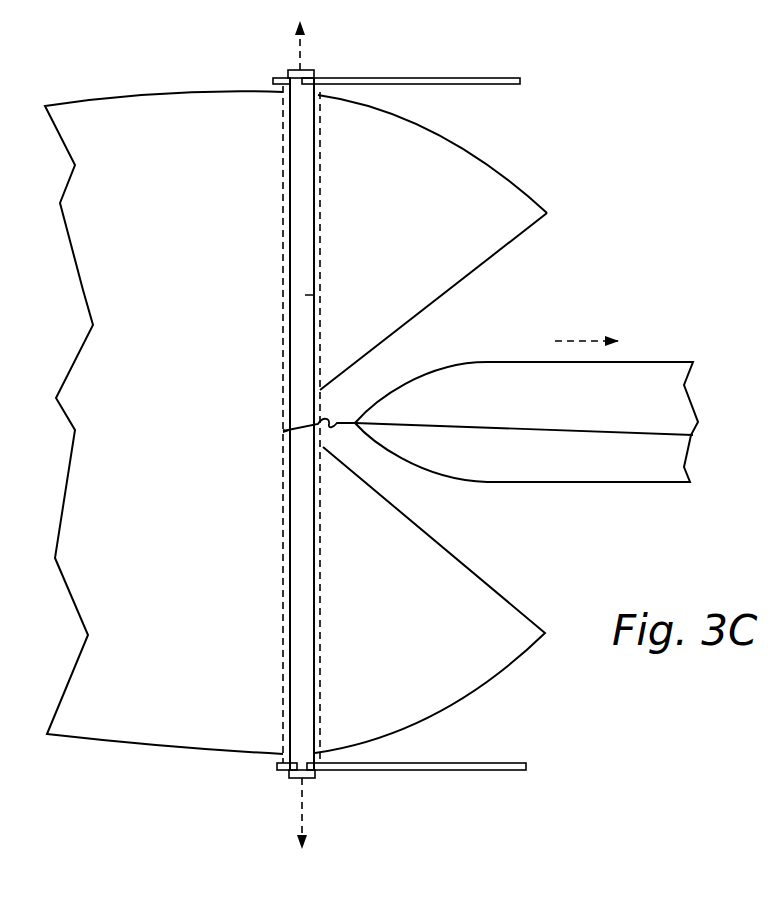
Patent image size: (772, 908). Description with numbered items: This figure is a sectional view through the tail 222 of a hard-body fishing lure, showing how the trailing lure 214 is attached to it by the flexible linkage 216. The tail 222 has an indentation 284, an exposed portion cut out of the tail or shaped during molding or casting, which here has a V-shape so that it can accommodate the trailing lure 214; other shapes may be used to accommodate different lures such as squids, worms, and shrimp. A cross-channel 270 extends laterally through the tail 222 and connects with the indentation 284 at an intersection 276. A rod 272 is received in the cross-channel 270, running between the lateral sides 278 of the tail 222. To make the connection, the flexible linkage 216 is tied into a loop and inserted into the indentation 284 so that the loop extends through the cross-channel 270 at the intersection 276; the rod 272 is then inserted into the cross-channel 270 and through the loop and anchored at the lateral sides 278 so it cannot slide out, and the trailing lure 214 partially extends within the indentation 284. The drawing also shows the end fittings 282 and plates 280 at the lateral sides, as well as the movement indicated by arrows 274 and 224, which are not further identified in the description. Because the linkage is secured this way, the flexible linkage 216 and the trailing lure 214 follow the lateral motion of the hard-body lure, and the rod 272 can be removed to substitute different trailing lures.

The trailing lure 214 is at (570, 492).
The flexible linkage 216 is at (360, 457).
The tail 222 is at (103, 90).
The direction of nozzle movement 224 is at (583, 340).
The cross-channel 270 is at (330, 224).
The rod 272 is at (307, 295).
The direction of shaft movement 274 is at (302, 50).
The intersection 276 is at (330, 374).
The lateral sides 278 is at (245, 79).
The mounting plate 280 is at (453, 78).
The end cap 282 is at (279, 72).
The indentation 284 is at (469, 330).